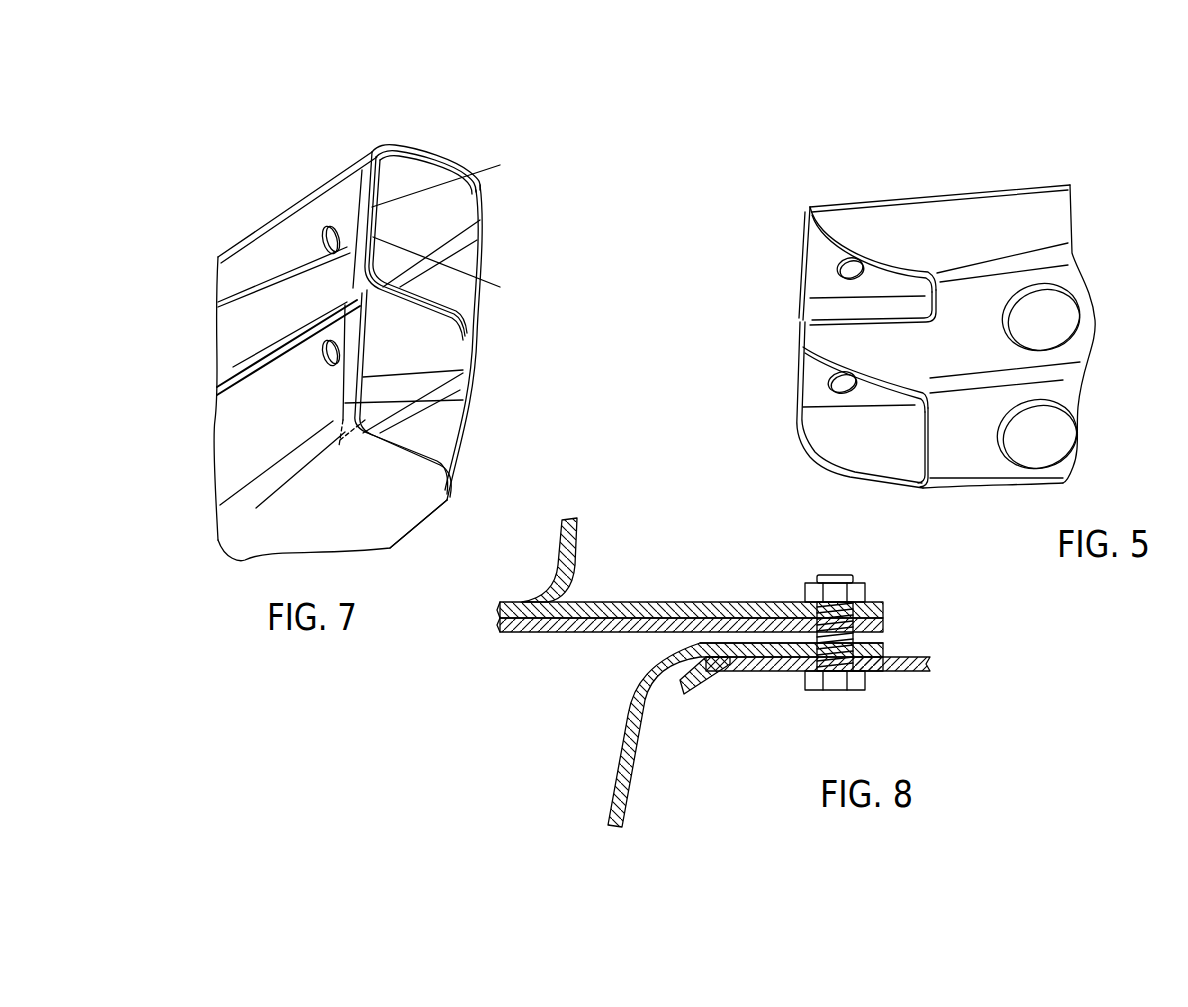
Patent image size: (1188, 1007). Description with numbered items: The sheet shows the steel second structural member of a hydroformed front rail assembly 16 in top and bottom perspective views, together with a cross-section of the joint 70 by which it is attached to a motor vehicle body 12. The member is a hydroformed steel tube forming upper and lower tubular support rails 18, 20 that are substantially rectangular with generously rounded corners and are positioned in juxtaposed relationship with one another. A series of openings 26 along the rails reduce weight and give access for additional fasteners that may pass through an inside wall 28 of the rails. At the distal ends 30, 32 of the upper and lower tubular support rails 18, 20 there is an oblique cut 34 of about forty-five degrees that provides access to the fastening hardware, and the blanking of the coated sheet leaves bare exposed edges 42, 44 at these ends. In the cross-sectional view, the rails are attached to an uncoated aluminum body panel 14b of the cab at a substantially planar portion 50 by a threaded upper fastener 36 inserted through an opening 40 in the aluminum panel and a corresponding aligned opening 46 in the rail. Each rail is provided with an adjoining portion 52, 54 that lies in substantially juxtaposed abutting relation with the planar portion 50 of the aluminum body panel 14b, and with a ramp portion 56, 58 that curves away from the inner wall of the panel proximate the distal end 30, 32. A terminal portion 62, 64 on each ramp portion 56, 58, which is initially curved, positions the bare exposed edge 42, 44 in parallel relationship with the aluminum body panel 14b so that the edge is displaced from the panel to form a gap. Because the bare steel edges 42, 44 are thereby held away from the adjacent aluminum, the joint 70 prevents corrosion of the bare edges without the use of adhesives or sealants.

In FIG. 8, the motor vehicle body 12 is at (558, 636).
In FIG. 8, the uncoated aluminum body panel 14b is at (620, 768).
In FIG. 7, the front rail assembly 16 is at (421, 110).
In FIG. 5, the front rail assembly 16 is at (932, 138).
In FIG. 7, the upper tubular support rail 18 is at (278, 252).
In FIG. 5, the upper tubular support rail 18 is at (1030, 213).
In FIG. 8, the upper tubular support rail 18 is at (930, 665).
In FIG. 7, the lower tubular support rail 20 is at (397, 517).
In FIG. 5, the lower tubular support rail 20 is at (967, 472).
In FIG. 5, the openings 26 is at (1040, 425).
In FIG. 5, the inside wall 28 is at (802, 207).
In FIG. 7, the distal end of upper tubular support rail 30 is at (370, 210).
In FIG. 5, the distal end of upper tubular support rail 30 is at (823, 270).
In FIG. 8, the distal end of upper tubular support rail 30 is at (698, 683).
In FIG. 7, the distal end of lower tubular support rail 32 is at (363, 350).
In FIG. 5, the distal end of lower tubular support rail 32 is at (813, 388).
In FIG. 7, the oblique cut 34 is at (480, 203).
In FIG. 5, the oblique cut 34 is at (883, 273).
In FIG. 8, the upper fastener 36 is at (833, 690).
In FIG. 7, the opening in aluminum sheet panel 40 is at (330, 226).
In FIG. 5, the opening in aluminum sheet panel 40 is at (900, 277).
In FIG. 8, the opening in aluminum sheet panel 40 is at (853, 688).
In FIG. 7, the bare exposed edge of upper rail 42 is at (360, 260).
In FIG. 5, the bare exposed edge of upper rail 42 is at (803, 260).
In FIG. 8, the bare exposed edge of upper rail 42 is at (682, 690).
In FIG. 7, the bare exposed edge of lower rail 44 is at (363, 380).
In FIG. 5, the bare exposed edge of lower rail 44 is at (803, 355).
In FIG. 8, the opening in tubular support rail 46 is at (855, 640).
In FIG. 8, the planar portion 50 is at (743, 647).
In FIG. 7, the adjoining portion of upper rail 52 is at (297, 275).
In FIG. 5, the adjoining portion of upper rail 52 is at (850, 200).
In FIG. 8, the adjoining portion of upper rail 52 is at (785, 663).
In FIG. 7, the adjoining portion of lower rail 54 is at (292, 417).
In FIG. 5, the adjoining portion of lower rail 54 is at (897, 407).
In FIG. 7, the ramp portion of upper rail 56 is at (370, 233).
In FIG. 5, the ramp portion of upper rail 56 is at (800, 295).
In FIG. 8, the ramp portion of upper rail 56 is at (710, 675).
In FIG. 7, the ramp portion of lower rail 58 is at (343, 403).
In FIG. 5, the ramp portion of lower rail 58 is at (795, 410).
In FIG. 7, the terminal portion of upper ramp 62 is at (383, 170).
In FIG. 5, the terminal portion of upper ramp 62 is at (810, 250).
In FIG. 8, the terminal portion of upper ramp 62 is at (686, 683).
In FIG. 7, the terminal portion of lower ramp 64 is at (343, 435).
In FIG. 5, the terminal portion of lower ramp 64 is at (803, 373).
In FIG. 8, the joint 70 is at (568, 734).